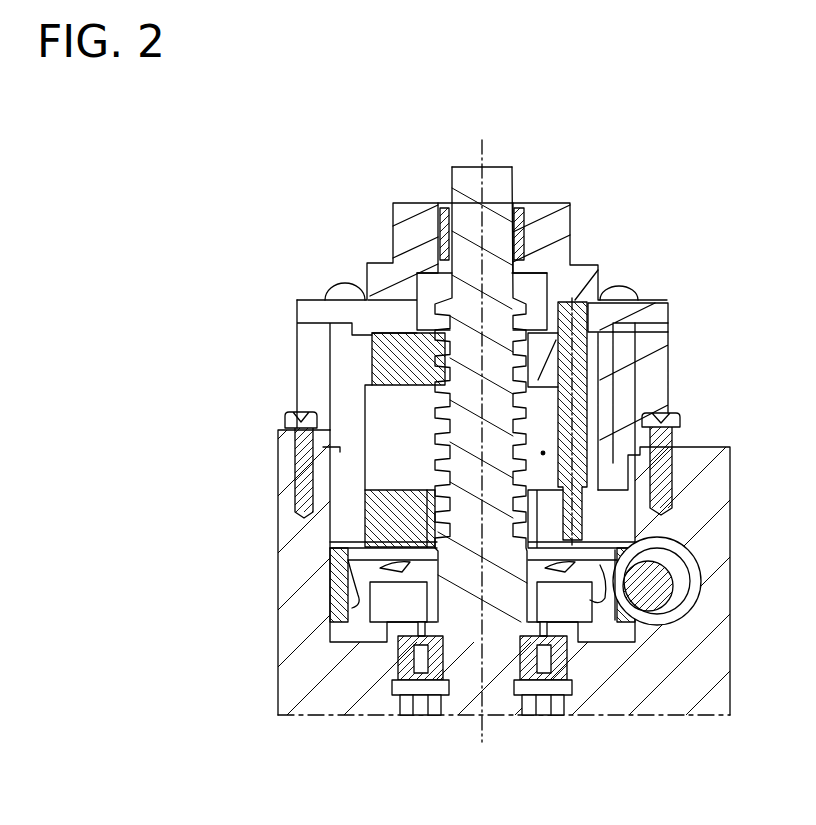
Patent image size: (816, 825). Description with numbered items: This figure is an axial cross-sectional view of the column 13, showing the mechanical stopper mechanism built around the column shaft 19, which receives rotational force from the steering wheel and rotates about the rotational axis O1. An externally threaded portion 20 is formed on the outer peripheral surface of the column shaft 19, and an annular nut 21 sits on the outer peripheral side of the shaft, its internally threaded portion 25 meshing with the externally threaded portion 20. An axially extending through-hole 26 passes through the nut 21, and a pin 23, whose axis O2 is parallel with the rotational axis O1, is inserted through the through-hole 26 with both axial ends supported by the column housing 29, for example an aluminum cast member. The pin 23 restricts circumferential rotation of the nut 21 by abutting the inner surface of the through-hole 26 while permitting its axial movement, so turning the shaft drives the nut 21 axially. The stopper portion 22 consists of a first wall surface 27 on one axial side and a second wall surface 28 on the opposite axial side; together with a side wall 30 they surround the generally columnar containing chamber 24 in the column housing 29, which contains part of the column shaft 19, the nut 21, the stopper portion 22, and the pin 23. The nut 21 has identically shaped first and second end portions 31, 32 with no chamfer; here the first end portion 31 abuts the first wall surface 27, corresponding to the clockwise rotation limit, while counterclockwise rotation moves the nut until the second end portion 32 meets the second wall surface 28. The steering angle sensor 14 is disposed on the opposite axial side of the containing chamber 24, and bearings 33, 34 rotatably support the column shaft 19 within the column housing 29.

The column 13 is at (390, 248).
The steering angle sensor 14 is at (325, 592).
The column shaft 19 is at (518, 184).
The externally threaded portion 20 is at (597, 428).
The nut 21 is at (318, 440).
The stopper portion 22 is at (315, 428).
The pin 23 is at (543, 453).
The containing chamber 24 is at (665, 478).
The internally threaded portion 25 is at (372, 368).
The through-hole 26 is at (533, 410).
The first wall surface 27 is at (372, 335).
The second wall surface 28 is at (372, 495).
The column housing 29 is at (660, 312).
The side wall 30 is at (396, 394).
The first end portion 31 is at (330, 297).
The second end portion 32 is at (365, 437).
The bearing 33 is at (527, 215).
The bearing 34 is at (398, 662).
The rotational axis O1 is at (470, 147).
The axis of the pin O2 is at (600, 268).